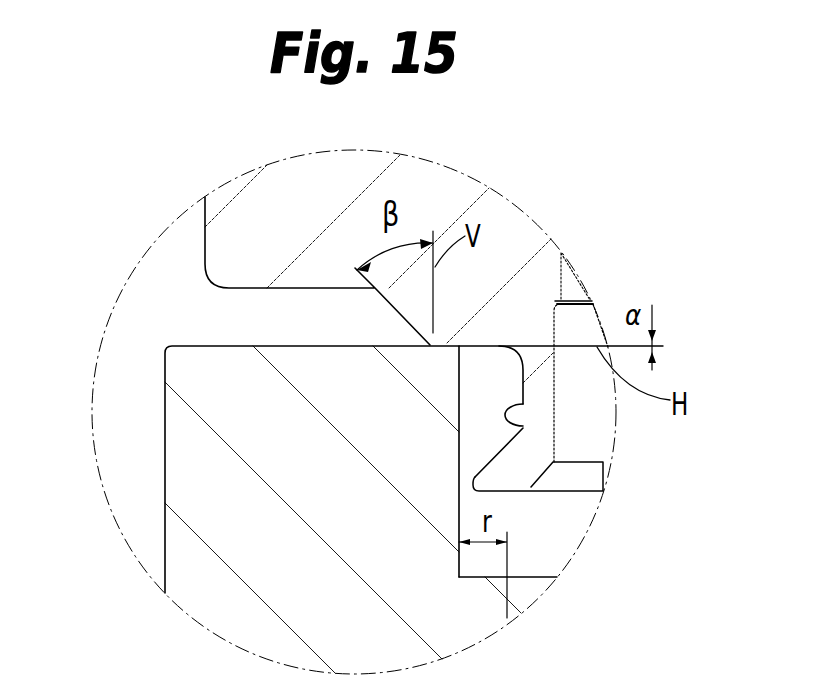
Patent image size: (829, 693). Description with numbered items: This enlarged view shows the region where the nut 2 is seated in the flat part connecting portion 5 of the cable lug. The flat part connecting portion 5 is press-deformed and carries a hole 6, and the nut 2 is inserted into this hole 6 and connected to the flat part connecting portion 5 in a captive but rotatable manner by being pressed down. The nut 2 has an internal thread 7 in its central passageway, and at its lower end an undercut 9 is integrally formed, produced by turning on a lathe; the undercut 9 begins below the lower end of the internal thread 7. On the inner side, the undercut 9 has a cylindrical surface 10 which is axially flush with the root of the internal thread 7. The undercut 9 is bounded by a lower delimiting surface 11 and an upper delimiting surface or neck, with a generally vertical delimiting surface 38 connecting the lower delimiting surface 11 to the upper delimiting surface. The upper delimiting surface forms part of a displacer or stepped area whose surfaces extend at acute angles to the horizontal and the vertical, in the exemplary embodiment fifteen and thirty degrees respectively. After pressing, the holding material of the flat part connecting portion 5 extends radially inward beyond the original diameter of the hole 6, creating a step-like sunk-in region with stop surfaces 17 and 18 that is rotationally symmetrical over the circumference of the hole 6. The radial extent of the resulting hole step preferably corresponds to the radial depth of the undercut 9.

The nut 2 is at (277, 218).
The flat part connecting portion 5 is at (260, 546).
The hole 6 is at (520, 593).
The internal thread 7 is at (567, 276).
The undercut 9 is at (508, 393).
The cylindrical surface 10 is at (584, 427).
The lower delimiting surface 11 is at (494, 456).
The stop surface 17 is at (485, 345).
The stop surface 18 is at (410, 322).
The generally vertical delimiting surface 38 is at (588, 453).